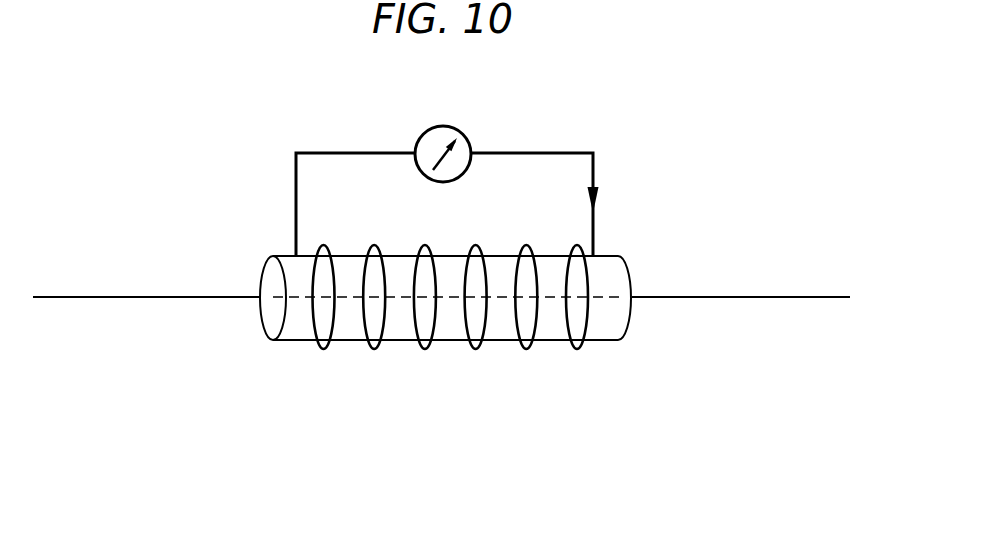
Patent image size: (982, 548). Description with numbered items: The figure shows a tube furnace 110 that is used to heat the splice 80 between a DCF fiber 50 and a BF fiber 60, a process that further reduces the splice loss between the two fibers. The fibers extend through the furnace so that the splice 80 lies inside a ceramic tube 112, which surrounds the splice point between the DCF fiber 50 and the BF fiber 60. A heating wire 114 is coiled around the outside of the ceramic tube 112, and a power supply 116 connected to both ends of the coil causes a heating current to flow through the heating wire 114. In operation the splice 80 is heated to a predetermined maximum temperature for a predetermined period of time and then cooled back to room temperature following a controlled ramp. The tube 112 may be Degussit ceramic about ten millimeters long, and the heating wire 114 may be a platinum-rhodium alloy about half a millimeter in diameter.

The DCF fiber 50 is at (148, 297).
The BF fiber 60 is at (753, 297).
The splice 80 is at (455, 297).
The tube furnace 110 is at (728, 102).
The ceramic tube 112 is at (618, 332).
The heating wire 114 is at (591, 277).
The power supply 116 is at (464, 133).